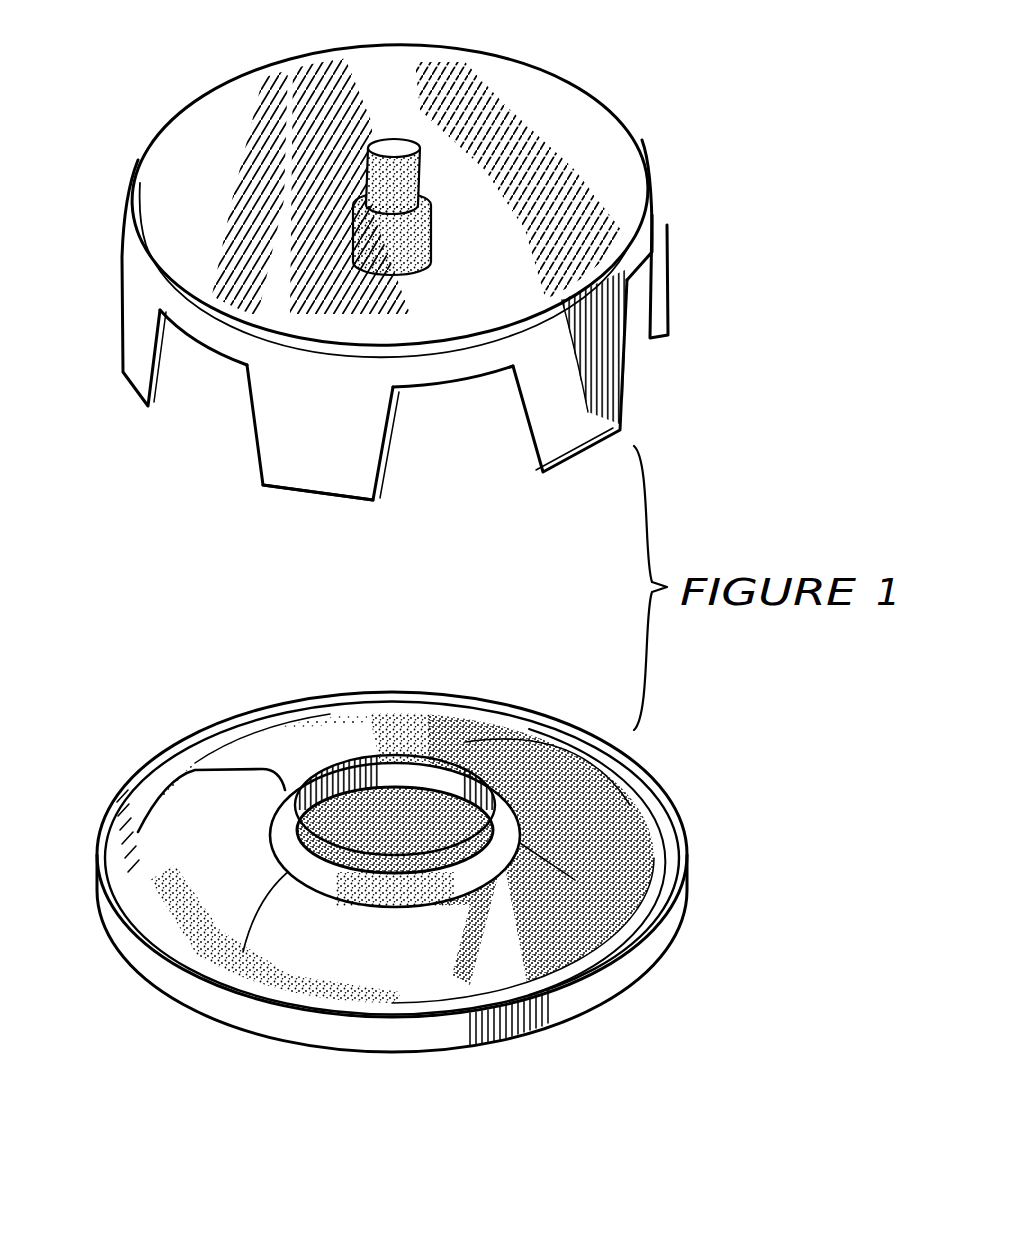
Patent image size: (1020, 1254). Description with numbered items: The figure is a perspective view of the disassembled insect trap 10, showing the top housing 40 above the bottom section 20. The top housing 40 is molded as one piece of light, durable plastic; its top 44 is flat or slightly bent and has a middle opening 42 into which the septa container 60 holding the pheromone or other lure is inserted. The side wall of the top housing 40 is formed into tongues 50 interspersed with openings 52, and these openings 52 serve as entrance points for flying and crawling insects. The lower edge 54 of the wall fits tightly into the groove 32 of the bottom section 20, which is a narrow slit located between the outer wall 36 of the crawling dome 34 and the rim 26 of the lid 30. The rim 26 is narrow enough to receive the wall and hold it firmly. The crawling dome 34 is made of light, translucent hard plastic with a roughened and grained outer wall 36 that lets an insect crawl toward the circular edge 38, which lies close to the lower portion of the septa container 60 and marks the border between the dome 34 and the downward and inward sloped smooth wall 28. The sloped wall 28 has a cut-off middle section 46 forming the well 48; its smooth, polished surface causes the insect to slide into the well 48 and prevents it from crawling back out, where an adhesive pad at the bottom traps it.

The trap 10 is at (112, 488).
The bottom section 20 is at (207, 1043).
The rim 26 is at (642, 952).
The downward and inward sloped smooth wall 28 is at (452, 790).
The lid 30 is at (698, 872).
The groove 32 is at (113, 822).
The crawling dome 34 is at (641, 750).
The outer wall 36 is at (573, 882).
The circular edge 38 is at (300, 752).
The top housing 40 is at (652, 133).
The middle opening 42 is at (423, 203).
The top 44 is at (235, 118).
The cut-off middle section 46 is at (392, 786).
The well 48 is at (296, 852).
The tongues 50 is at (676, 308).
The openings 52 is at (636, 352).
The lower edge 54 is at (268, 488).
The septa container 60 is at (414, 147).